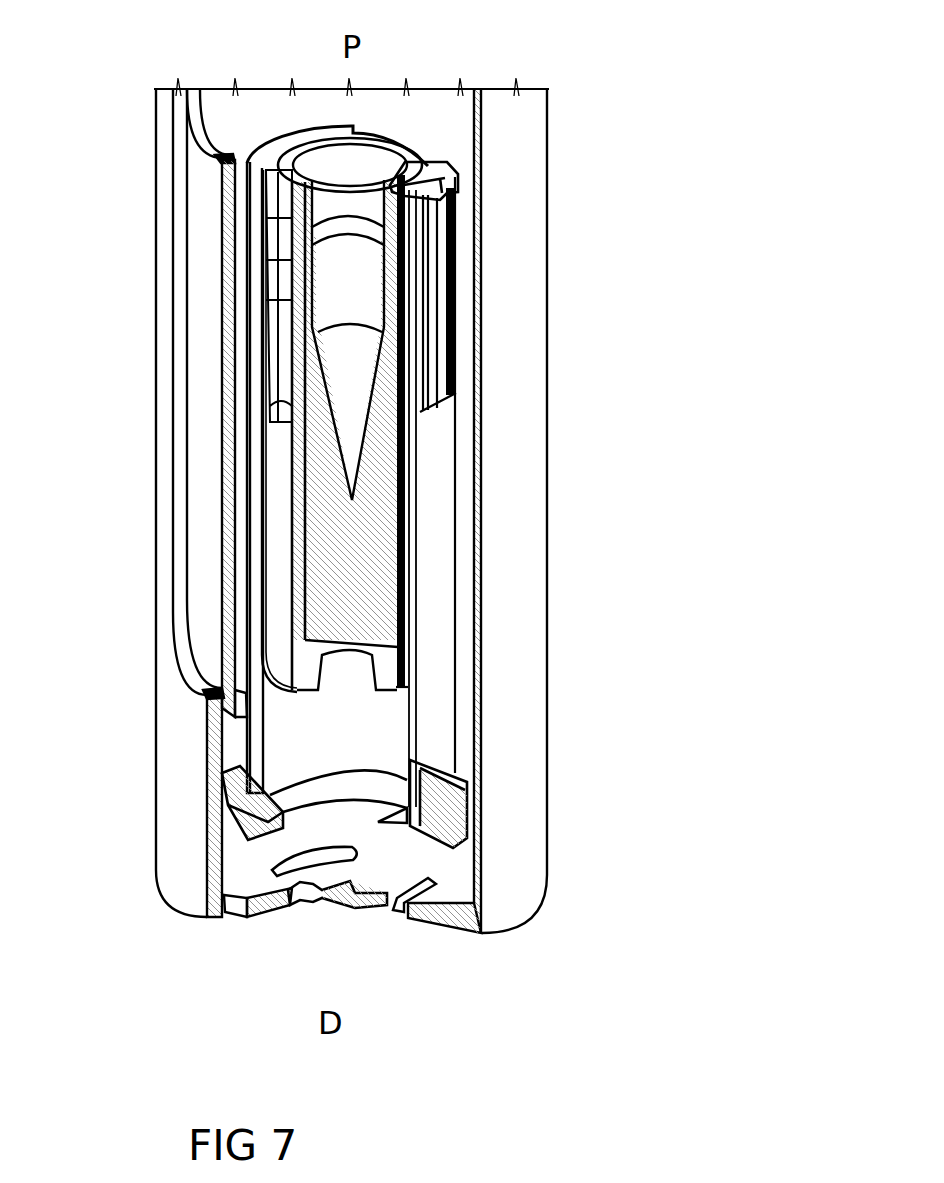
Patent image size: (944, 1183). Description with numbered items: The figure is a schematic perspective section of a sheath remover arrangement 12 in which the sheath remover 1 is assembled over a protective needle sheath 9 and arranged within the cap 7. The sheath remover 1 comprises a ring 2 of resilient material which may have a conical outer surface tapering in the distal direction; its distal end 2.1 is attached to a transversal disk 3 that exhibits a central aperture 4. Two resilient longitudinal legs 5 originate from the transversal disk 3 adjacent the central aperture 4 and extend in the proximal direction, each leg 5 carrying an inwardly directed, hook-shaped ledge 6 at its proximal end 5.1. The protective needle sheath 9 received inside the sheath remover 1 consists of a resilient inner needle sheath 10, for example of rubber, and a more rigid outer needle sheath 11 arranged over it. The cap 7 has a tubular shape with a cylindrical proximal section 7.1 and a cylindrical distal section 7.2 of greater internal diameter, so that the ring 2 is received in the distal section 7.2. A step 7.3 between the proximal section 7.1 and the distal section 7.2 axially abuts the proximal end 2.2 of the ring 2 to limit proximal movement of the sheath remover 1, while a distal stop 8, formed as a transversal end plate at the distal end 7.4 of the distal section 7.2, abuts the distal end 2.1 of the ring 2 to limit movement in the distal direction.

The sheath remover 1 is at (460, 590).
The ring 2 is at (452, 800).
The distal end of the ring 2.1 is at (221, 905).
The proximal end of the ring 2.2 is at (240, 770).
The transversal disk 3 is at (254, 825).
The central aperture 4 is at (340, 802).
The resilient longitudinal leg 5 is at (445, 504).
The proximal end of the leg 5.1 is at (458, 188).
The ledge 6 is at (428, 170).
The cap 7 is at (556, 393).
The proximal section 7.1 is at (228, 642).
The distal section 7.2 is at (214, 845).
The step 7.3 is at (238, 708).
The distal end of the distal section 7.4 is at (542, 905).
The distal stop 8 is at (385, 905).
The protective needle sheath 9 is at (278, 392).
The inner needle sheath 10 is at (322, 548).
The outer needle sheath 11 is at (282, 458).
The sheath remover arrangement 12 is at (573, 292).